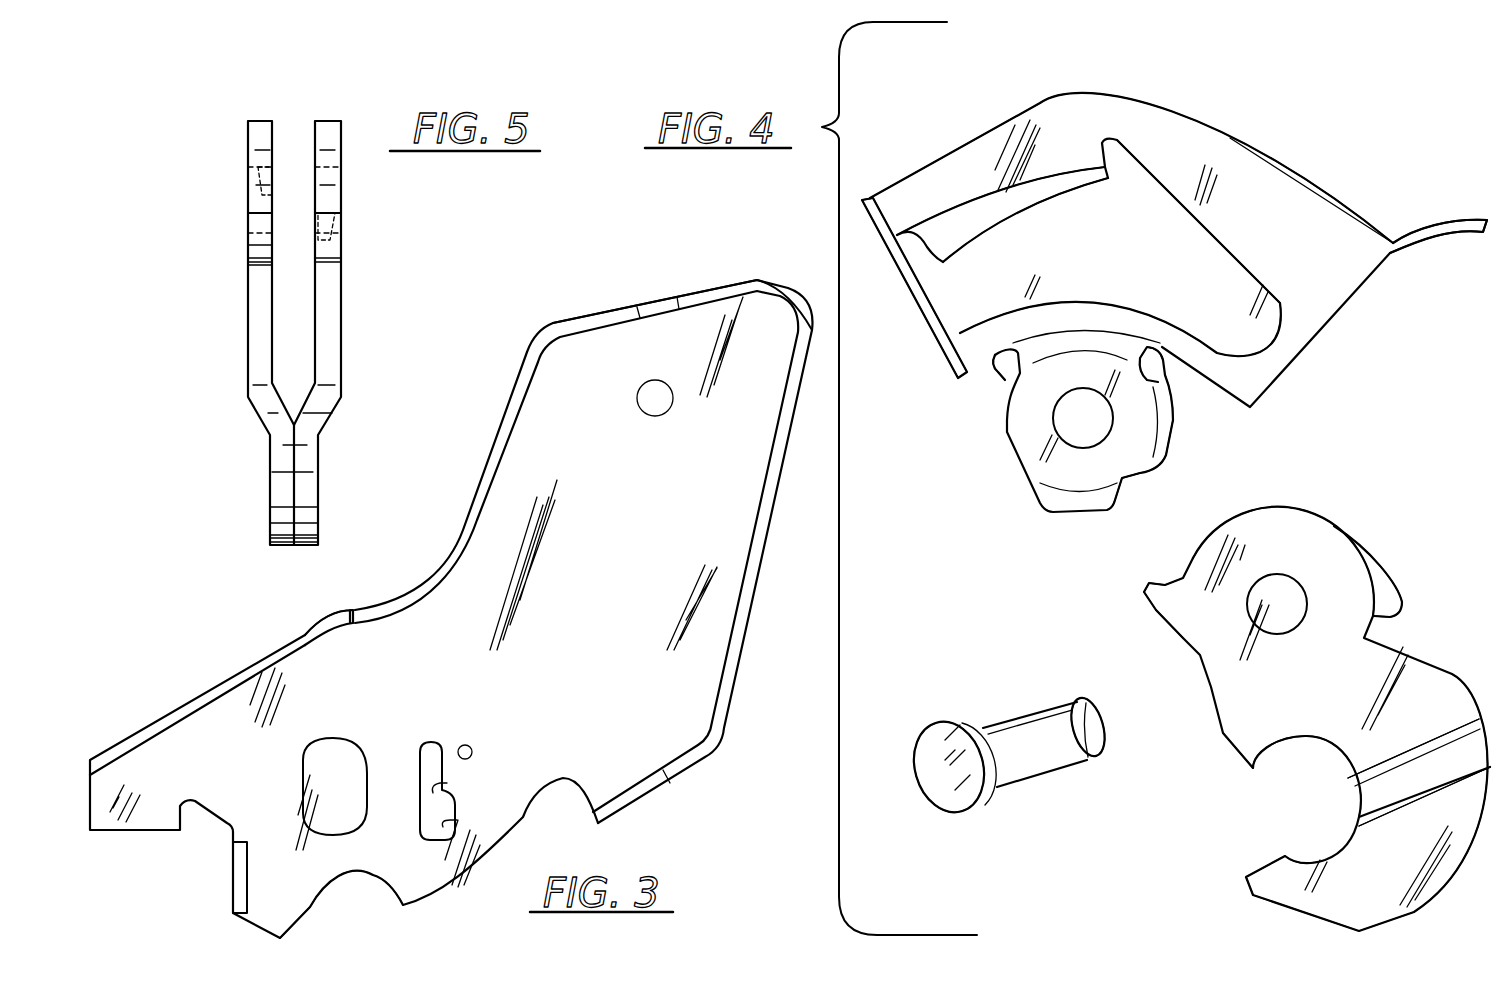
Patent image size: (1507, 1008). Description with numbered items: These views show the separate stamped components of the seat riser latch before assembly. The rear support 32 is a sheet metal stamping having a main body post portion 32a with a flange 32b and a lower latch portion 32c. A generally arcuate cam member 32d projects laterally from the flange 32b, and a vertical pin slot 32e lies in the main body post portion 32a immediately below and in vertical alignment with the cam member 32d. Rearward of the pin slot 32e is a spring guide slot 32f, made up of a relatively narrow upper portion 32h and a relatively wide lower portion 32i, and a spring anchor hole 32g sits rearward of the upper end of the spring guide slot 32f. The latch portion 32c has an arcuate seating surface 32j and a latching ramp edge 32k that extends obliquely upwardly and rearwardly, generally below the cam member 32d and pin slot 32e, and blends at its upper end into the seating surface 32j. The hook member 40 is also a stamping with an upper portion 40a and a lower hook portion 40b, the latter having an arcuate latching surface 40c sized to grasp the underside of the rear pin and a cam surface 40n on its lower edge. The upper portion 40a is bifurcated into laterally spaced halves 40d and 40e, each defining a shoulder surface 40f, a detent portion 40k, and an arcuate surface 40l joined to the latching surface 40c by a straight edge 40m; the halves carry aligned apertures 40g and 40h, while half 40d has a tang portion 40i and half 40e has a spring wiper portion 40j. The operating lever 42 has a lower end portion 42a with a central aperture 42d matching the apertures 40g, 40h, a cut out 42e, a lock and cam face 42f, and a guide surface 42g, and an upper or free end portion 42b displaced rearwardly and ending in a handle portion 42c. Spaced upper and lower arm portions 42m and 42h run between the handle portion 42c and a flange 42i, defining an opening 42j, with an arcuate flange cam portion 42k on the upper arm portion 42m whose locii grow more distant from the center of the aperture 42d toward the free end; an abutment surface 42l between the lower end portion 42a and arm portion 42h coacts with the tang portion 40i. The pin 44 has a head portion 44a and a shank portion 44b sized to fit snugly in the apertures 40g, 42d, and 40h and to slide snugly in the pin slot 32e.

In FIG. 3, the rear support 32 is at (440, 520).
In FIG. 3, the main body post portion 32a is at (690, 470).
In FIG. 3, the flange 32b is at (522, 380).
In FIG. 3, the lower latch portion 32c is at (225, 890).
In FIG. 3, the cam member 32d is at (345, 610).
In FIG. 3, the vertical pin slot 32e is at (355, 775).
In FIG. 3, the spring guide slot 32f is at (435, 742).
In FIG. 3, the spring anchor hole 32g is at (470, 748).
In FIG. 3, the relatively narrow upper portion 32h is at (440, 786).
In FIG. 3, the relatively wide lower portion 32i is at (447, 825).
In FIG. 3, the arcuate seating surface 32j is at (368, 883).
In FIG. 3, the latching ramp edge 32k is at (308, 902).
In FIG. 4, the hook member 40 is at (1188, 665).
In FIG. 5, the upper portion 40a is at (235, 150).
In FIG. 4, the upper portion 40a is at (1340, 515).
In FIG. 4, the lower hook portion 40b is at (1242, 882).
In FIG. 4, the arcuate latching surface 40c is at (1318, 858).
In FIG. 5, the half 40d is at (260, 121).
In FIG. 5, the half 40e is at (330, 121).
In FIG. 5, the shoulder surface 40f is at (258, 258).
In FIG. 4, the shoulder surface 40f is at (1400, 655).
In FIG. 5, the aperture 40g is at (262, 167).
In FIG. 4, the aperture 40g is at (1295, 590).
In FIG. 5, the aperture 40h is at (322, 238).
In FIG. 4, the tang portion 40i is at (1148, 595).
In FIG. 4, the spring wiper portion 40j is at (1395, 598).
In FIG. 4, the detent portion 40k is at (1245, 762).
In FIG. 4, the arcuate surface 40l is at (1305, 740).
In FIG. 4, the straight edge 40m is at (1345, 792).
In FIG. 4, the cam surface 40n is at (1300, 898).
In FIG. 4, the operating lever 42 is at (1030, 95).
In FIG. 4, the lower end portion 42a is at (1003, 438).
In FIG. 4, the upper or free end portion 42b is at (1165, 98).
In FIG. 4, the handle portion 42c is at (1430, 218).
In FIG. 4, the central aperture 42d is at (1078, 438).
In FIG. 4, the cut out 42e is at (1170, 368).
In FIG. 4, the lock and cam face 42f is at (1135, 478).
In FIG. 4, the guide surface 42g is at (1175, 442).
In FIG. 4, the lower arm portion 42h is at (1096, 298).
In FIG. 4, the flange 42i is at (925, 345).
In FIG. 4, the opening 42j is at (1228, 258).
In FIG. 4, the arcuate flange cam portion 42k is at (1072, 192).
In FIG. 4, the abutment surface 42l is at (990, 370).
In FIG. 4, the upper arm portion 42m is at (1290, 170).
In FIG. 4, the pin 44 is at (1010, 710).
In FIG. 4, the head portion 44a is at (930, 762).
In FIG. 4, the shank portion 44b is at (1047, 722).